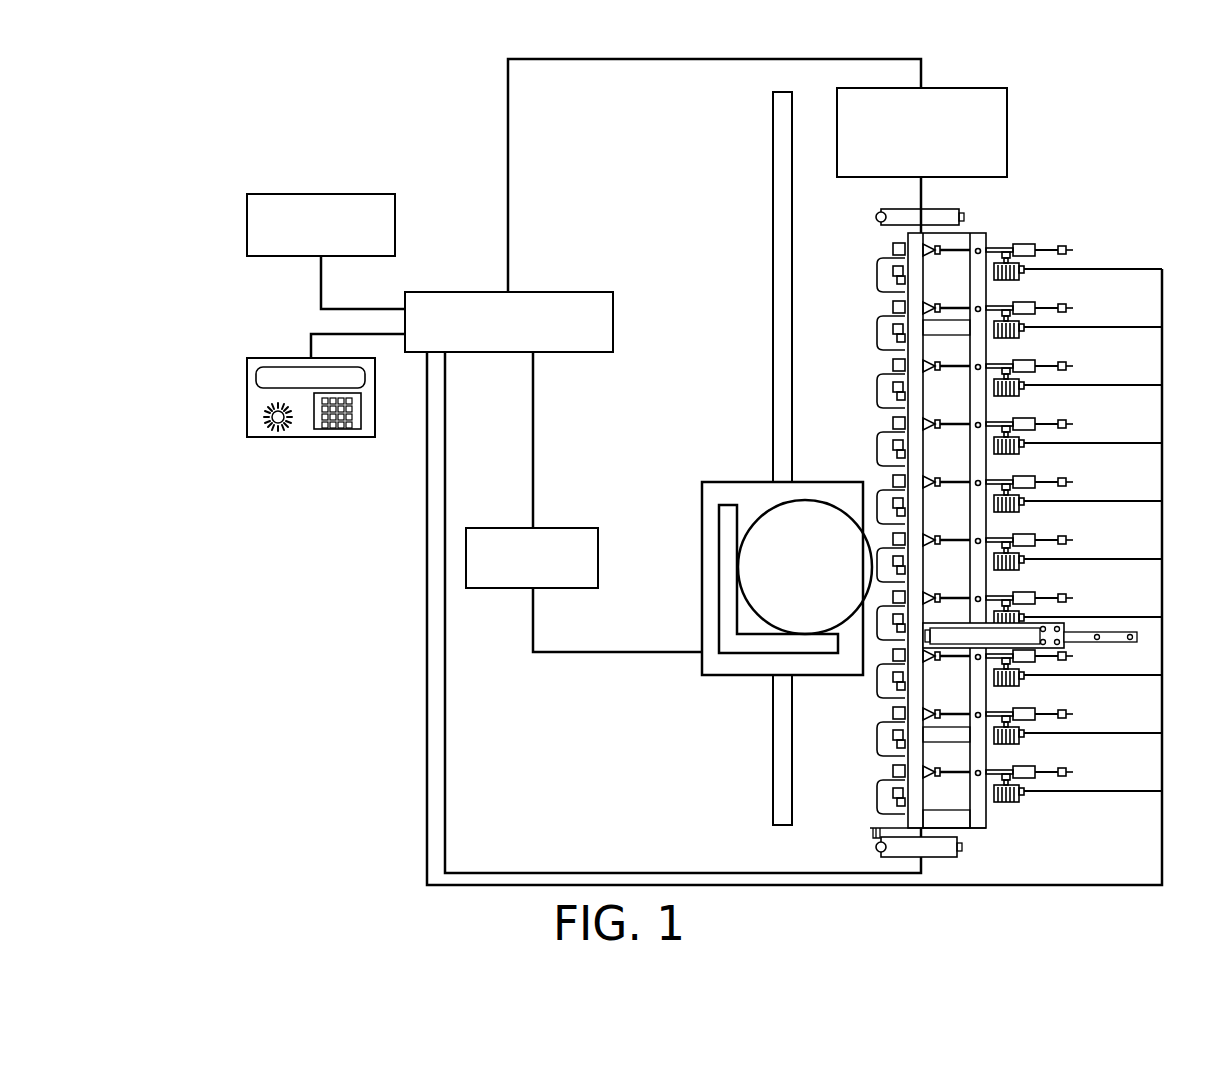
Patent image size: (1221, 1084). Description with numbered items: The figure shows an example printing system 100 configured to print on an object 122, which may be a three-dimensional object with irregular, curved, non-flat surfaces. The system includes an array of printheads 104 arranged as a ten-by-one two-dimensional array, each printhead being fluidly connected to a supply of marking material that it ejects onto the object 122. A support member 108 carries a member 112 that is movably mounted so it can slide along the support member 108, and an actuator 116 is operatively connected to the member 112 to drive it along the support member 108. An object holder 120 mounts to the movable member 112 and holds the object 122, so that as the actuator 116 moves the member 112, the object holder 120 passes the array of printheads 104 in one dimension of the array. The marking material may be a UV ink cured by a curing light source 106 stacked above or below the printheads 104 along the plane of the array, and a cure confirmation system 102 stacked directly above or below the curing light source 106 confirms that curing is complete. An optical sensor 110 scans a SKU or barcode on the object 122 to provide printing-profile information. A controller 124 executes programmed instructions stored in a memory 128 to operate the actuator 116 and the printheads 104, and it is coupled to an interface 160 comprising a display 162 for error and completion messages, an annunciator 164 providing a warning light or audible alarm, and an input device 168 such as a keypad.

The printing system 100 is at (340, 114).
The cure confirmation system 102 is at (1007, 131).
The array of printheads 104 is at (988, 522).
The curing light source 106 is at (964, 218).
The support member 108 is at (772, 740).
The optical sensor 110 is at (962, 857).
The member 112 is at (742, 566).
The actuator 116 is at (563, 528).
The object holder 120 is at (719, 547).
The object 122 is at (762, 514).
The controller 124 is at (557, 352).
The memory 128 is at (247, 225).
The interface 160 is at (305, 408).
The display 162 is at (278, 358).
The annunciator 164 is at (266, 423).
The input device 168 is at (345, 430).